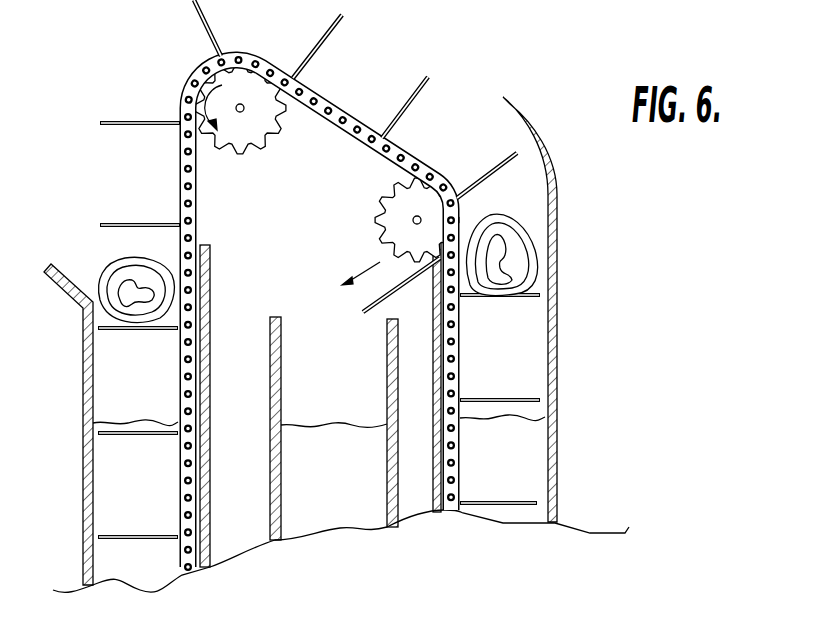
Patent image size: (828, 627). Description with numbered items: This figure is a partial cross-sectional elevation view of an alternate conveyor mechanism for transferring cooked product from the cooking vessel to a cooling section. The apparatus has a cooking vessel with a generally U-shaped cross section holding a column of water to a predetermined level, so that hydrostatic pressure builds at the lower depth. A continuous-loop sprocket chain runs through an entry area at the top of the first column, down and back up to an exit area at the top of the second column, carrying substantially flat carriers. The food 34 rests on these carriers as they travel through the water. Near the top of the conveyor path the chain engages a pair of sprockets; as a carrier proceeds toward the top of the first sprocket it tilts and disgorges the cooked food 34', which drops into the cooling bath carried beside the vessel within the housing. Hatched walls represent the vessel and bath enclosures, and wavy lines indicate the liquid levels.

The food 34 is at (179, 289).
The cooked food 34' is at (559, 243).